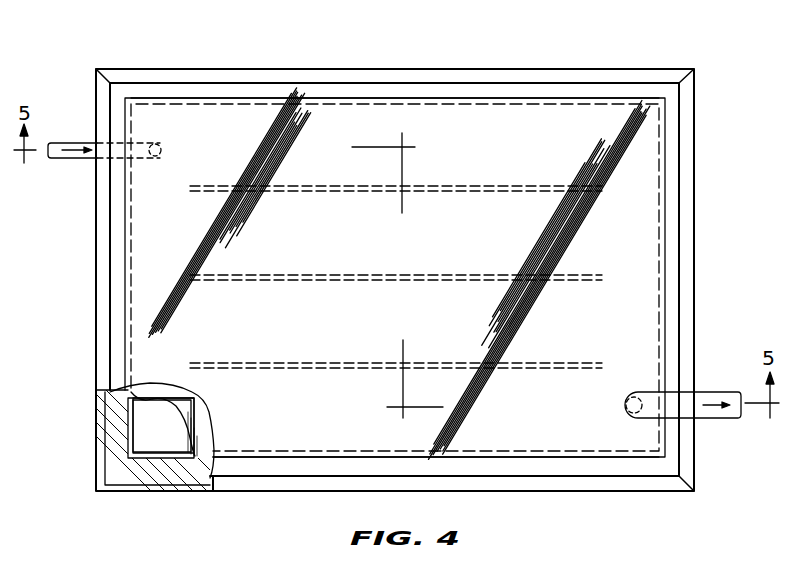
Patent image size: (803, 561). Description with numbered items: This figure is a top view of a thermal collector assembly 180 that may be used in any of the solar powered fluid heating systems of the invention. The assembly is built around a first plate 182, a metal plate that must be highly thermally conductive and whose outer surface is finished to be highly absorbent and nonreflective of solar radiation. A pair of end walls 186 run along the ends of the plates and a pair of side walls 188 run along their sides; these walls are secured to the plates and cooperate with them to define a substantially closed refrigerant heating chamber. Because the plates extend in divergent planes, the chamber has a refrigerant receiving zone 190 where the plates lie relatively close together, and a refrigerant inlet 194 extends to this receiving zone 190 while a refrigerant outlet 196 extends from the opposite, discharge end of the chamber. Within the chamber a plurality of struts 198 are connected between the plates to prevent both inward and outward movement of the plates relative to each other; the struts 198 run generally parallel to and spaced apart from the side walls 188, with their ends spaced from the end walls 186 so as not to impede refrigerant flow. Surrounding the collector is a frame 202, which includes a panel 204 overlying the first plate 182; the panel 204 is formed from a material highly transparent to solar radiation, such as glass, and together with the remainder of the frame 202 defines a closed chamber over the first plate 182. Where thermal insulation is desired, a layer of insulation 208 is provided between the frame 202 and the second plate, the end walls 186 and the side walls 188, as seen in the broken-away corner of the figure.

The thermal collector assembly 180 is at (140, 28).
The first plate 182 is at (185, 408).
The end walls 186 is at (664, 177).
The side walls 188 is at (378, 97).
The refrigerant receiving zone 190 is at (136, 428).
The refrigerant inlet 194 is at (170, 150).
The refrigerant outlet 196 is at (622, 406).
The struts 198 is at (320, 193).
The frame 202 is at (97, 270).
The panel 204 is at (527, 127).
The layer of insulation 208 is at (163, 475).